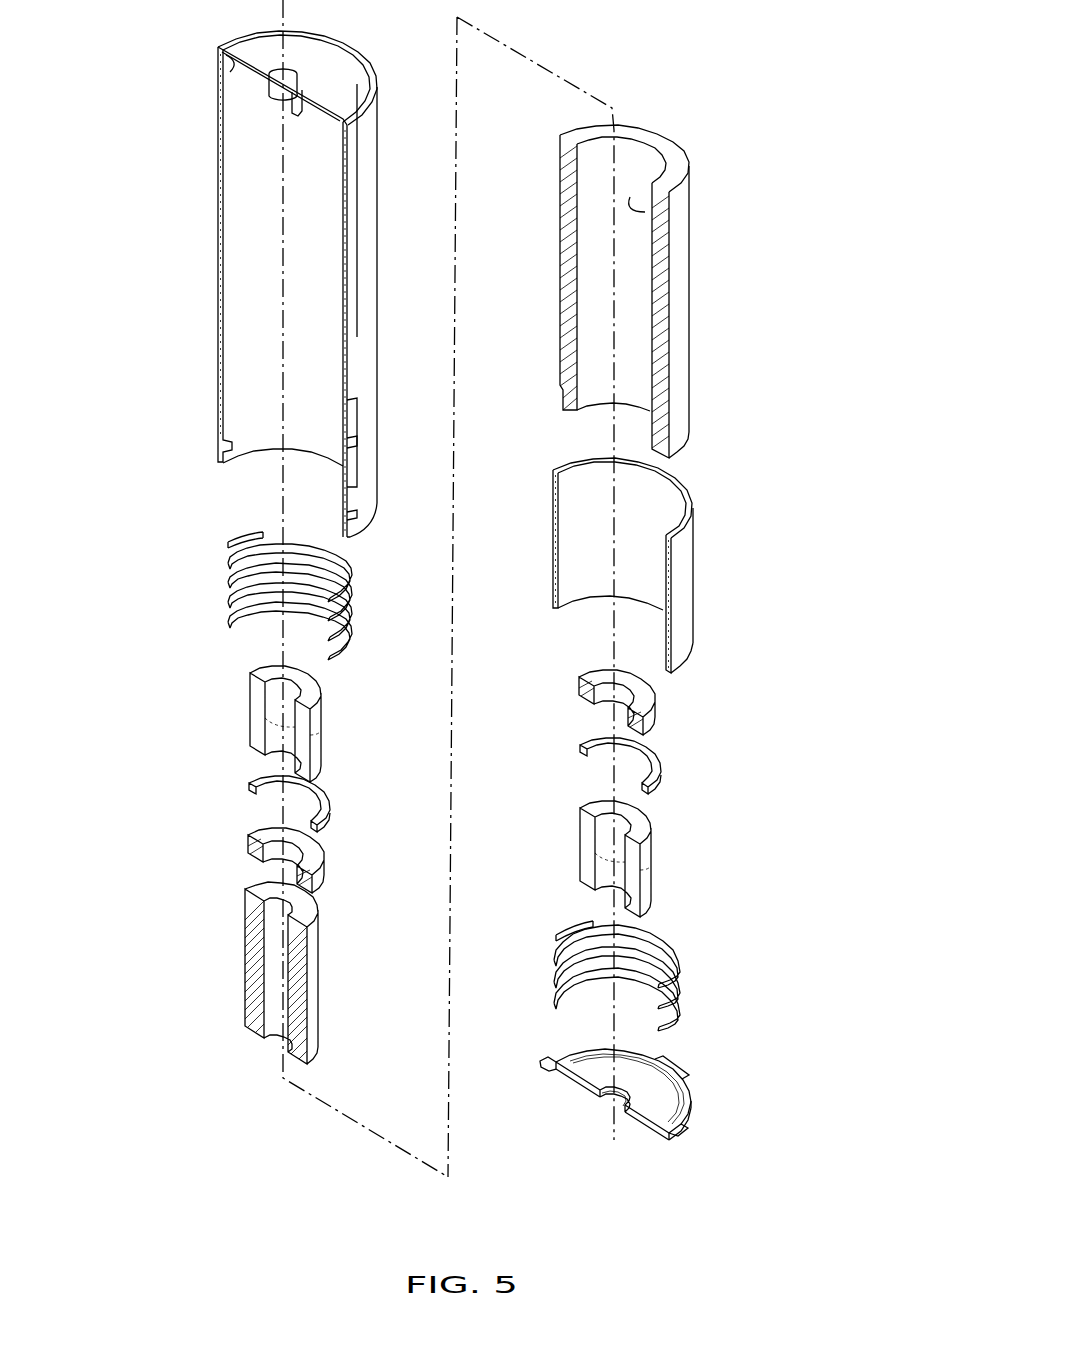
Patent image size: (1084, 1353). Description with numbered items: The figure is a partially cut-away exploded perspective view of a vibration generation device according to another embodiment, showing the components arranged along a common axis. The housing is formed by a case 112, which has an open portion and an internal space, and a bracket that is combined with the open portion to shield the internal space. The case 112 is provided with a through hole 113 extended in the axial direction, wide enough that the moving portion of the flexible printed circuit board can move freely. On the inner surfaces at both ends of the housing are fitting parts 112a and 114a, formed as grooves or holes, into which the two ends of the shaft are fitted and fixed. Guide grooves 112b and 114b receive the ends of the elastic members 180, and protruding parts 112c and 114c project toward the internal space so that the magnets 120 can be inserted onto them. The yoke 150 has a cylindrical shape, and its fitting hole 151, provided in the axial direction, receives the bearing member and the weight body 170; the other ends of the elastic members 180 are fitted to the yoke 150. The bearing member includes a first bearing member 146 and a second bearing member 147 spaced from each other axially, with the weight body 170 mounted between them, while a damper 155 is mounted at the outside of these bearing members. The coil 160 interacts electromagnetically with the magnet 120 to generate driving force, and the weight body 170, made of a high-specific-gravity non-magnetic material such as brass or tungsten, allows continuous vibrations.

The case 112 is at (204, 253).
The fitting part 112a is at (296, 108).
The guide groove 112b is at (235, 66).
The protruding part 112c is at (270, 93).
The through hole 113 is at (350, 428).
The fitting part 114a is at (610, 1110).
The guide groove 114b is at (563, 1090).
The protruding part 114c is at (587, 1103).
The magnet 120 is at (246, 714).
The first bearing member 146 is at (246, 845).
The second bearing member 147 is at (650, 700).
The yoke 150 is at (690, 130).
The fitting hole 151 is at (632, 205).
The damper 155 is at (244, 790).
The coil 160 is at (694, 567).
The weight body 170 is at (246, 930).
The elastic member 180 is at (226, 560).